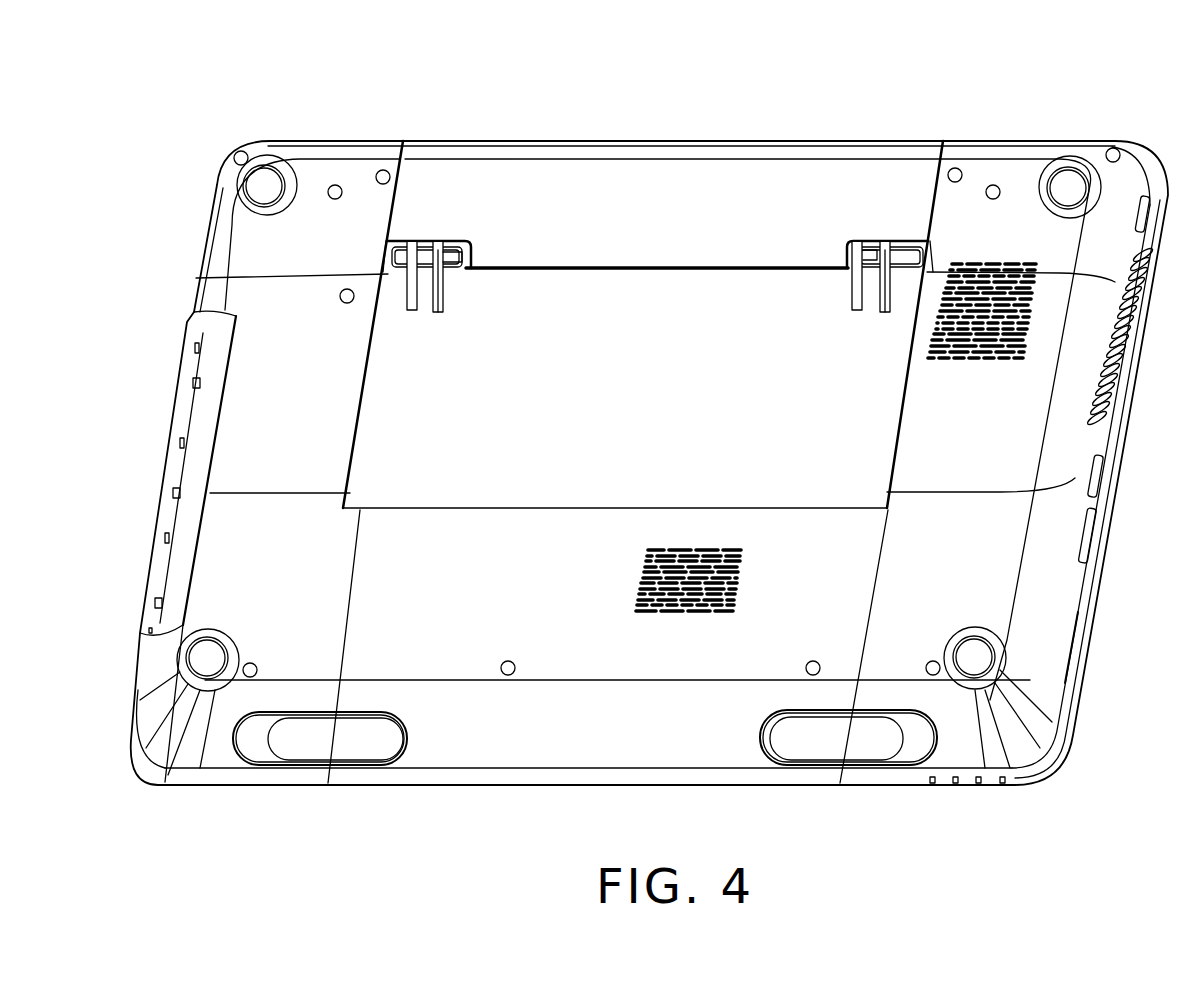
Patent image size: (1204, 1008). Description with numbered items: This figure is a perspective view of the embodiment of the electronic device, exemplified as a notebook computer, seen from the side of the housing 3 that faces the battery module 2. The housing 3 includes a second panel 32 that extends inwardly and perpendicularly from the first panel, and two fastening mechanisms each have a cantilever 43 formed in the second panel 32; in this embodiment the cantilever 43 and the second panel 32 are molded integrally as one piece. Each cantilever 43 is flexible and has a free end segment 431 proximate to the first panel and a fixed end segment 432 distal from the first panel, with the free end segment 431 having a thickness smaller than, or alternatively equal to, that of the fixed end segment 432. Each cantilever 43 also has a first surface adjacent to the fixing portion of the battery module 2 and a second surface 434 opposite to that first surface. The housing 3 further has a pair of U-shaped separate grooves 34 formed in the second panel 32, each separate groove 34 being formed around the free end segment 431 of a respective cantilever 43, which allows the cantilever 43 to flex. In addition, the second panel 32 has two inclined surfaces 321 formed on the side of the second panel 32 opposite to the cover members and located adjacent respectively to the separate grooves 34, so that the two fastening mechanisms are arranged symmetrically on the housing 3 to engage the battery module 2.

The battery module 2 is at (637, 197).
The housing 3 is at (1120, 490).
The second panel 32 is at (790, 445).
The separate groove 34 is at (441, 240).
The inclined surface 321 is at (425, 238).
The cantilever 43 is at (587, 289).
The free end segment 431 is at (467, 253).
The fixed end segment 432 is at (420, 305).
The second surface 434 is at (443, 288).